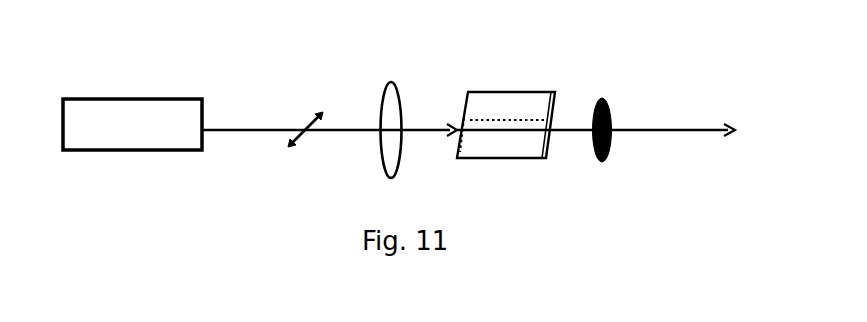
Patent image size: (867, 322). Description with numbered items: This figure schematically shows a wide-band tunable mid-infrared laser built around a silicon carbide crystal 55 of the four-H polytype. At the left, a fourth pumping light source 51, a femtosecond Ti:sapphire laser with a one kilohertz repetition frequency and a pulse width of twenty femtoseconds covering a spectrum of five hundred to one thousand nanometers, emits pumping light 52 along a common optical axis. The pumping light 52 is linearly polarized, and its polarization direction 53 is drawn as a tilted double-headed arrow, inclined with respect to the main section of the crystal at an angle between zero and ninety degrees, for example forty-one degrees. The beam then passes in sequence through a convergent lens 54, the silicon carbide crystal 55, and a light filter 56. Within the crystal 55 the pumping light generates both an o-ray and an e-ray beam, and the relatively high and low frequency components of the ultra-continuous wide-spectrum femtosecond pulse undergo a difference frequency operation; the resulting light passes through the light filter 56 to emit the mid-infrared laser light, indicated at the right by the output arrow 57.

The fourth pumping light source 51 is at (132, 124).
The pumping light 52 is at (329, 115).
The polarization direction 53 is at (318, 110).
The convergent lens 54 is at (389, 116).
The 4H silicon carbide crystal 55 is at (592, 107).
The light filter 56 is at (602, 109).
The output light 57 is at (693, 115).